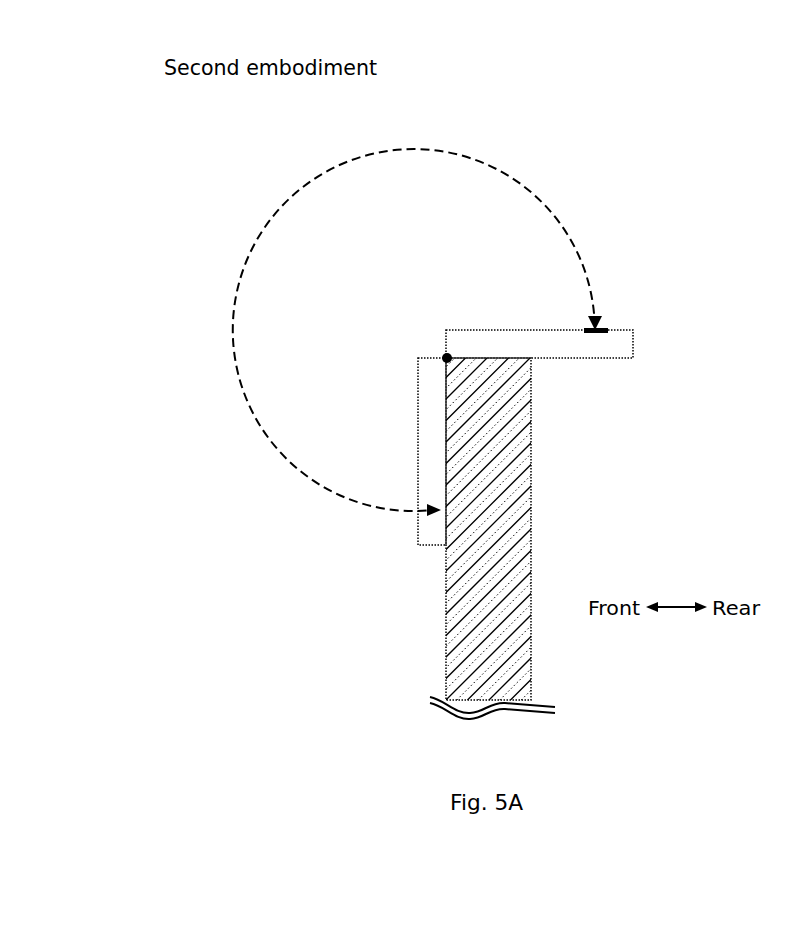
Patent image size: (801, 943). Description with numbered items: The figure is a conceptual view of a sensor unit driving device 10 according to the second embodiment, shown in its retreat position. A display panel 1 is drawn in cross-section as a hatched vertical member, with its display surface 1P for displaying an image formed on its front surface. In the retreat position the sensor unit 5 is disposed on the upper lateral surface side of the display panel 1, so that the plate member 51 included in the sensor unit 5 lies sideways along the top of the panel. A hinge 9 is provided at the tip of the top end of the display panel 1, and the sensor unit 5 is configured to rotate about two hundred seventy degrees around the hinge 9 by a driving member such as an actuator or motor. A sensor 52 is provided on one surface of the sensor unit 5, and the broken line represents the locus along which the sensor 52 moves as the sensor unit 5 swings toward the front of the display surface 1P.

The display panel 1 is at (533, 482).
The display surface 1P is at (446, 660).
The sensor unit 5 is at (393, 461).
The hinge 9 is at (448, 356).
The sensor unit driving device 10 is at (668, 323).
The plate member 51 is at (633, 345).
The sensor 52 is at (600, 327).